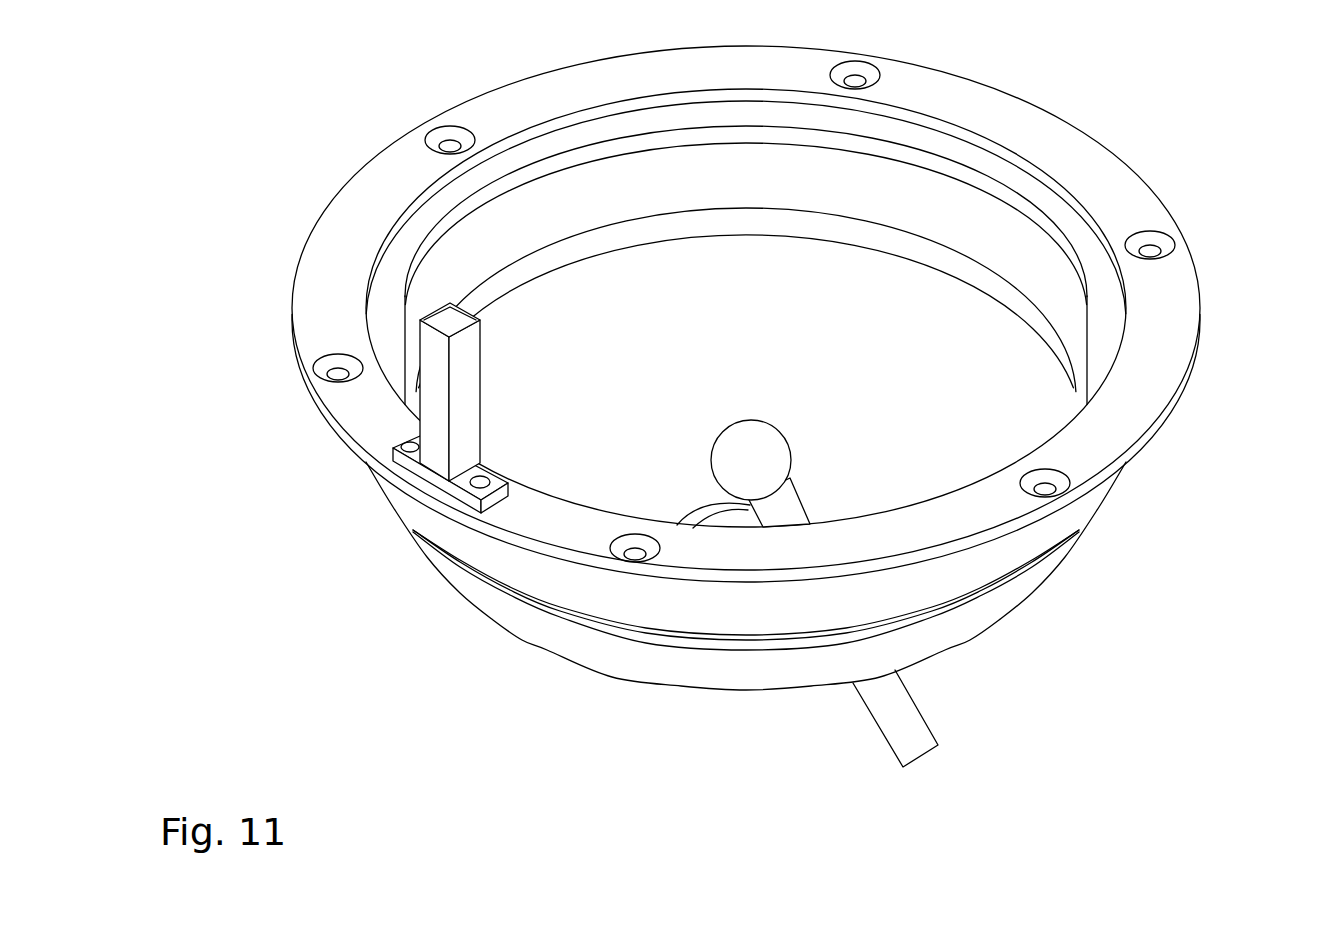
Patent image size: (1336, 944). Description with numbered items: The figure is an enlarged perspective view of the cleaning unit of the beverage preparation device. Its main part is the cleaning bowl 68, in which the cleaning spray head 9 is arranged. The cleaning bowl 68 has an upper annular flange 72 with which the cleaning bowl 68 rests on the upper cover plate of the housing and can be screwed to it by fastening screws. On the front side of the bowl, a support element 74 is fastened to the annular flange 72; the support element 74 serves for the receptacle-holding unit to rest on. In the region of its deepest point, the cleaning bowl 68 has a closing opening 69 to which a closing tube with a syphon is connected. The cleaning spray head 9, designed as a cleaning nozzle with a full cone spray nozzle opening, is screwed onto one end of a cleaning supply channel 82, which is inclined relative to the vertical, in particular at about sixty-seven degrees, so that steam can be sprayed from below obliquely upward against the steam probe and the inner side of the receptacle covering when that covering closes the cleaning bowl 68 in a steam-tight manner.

The cleaning bowl 68 is at (737, 406).
The annular flange 72 is at (1175, 347).
The support element 74 is at (437, 377).
The cleaning spray head 9 is at (727, 453).
The closing opening 69 is at (738, 520).
The cleaning supply channel 82 is at (903, 707).